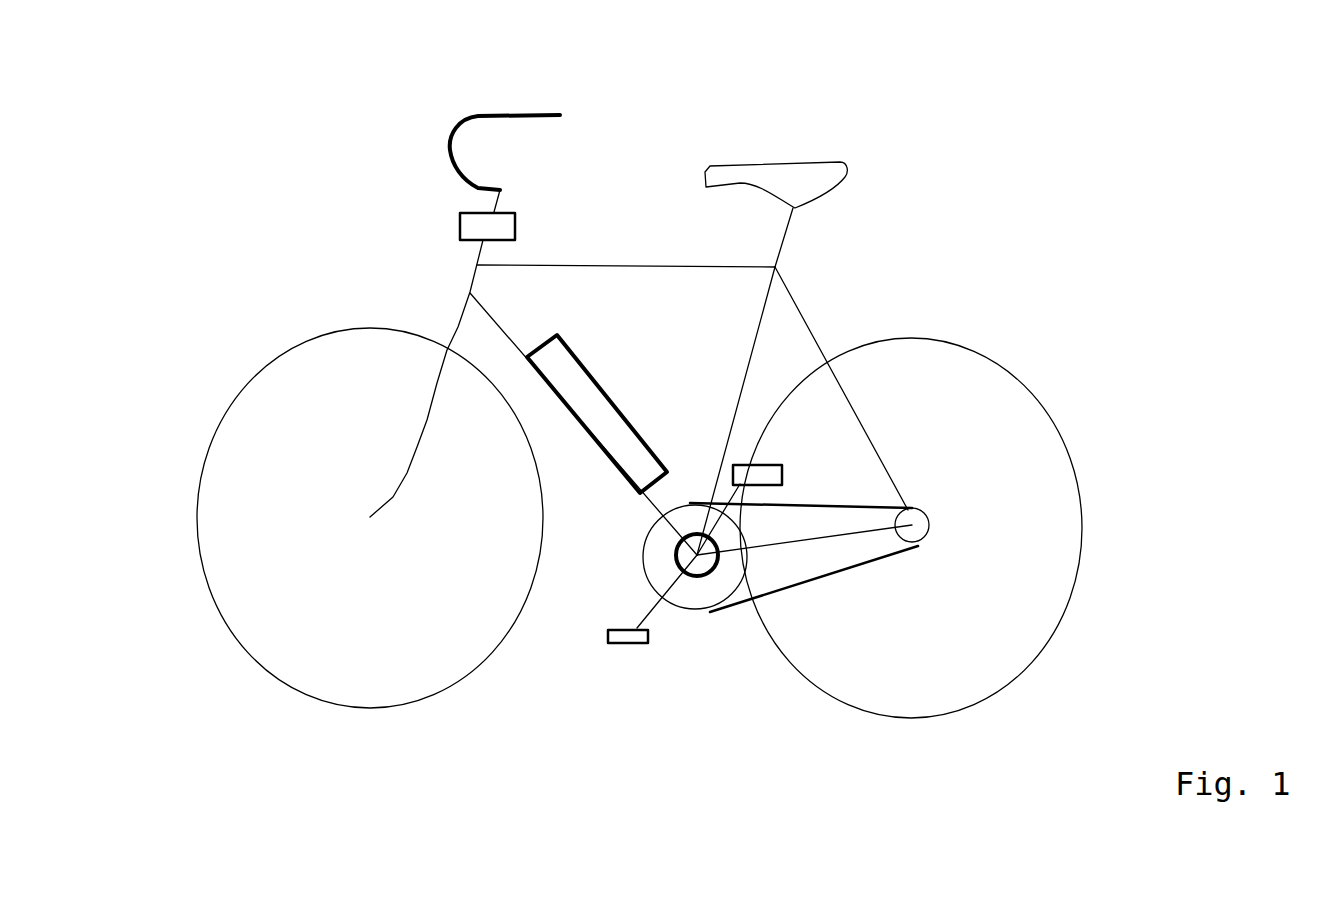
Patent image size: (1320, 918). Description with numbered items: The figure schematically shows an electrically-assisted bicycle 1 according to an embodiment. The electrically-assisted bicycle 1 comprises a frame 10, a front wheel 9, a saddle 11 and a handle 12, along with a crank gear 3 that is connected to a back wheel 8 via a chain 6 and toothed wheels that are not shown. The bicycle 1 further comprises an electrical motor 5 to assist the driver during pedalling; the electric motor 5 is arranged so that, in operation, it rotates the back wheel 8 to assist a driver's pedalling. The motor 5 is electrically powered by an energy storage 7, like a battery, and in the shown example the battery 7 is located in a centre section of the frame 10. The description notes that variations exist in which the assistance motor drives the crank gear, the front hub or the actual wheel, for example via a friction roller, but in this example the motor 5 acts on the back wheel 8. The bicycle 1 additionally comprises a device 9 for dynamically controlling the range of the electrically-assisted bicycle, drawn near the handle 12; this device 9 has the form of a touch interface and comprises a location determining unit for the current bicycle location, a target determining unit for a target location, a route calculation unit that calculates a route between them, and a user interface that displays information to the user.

The electrically-assisted bicycle 1 is at (226, 241).
The crank gear 3 is at (688, 617).
The electrical motor 5 is at (675, 567).
The chain 6 is at (832, 582).
The energy storage 7 is at (590, 400).
The back wheel 8 is at (1070, 593).
The front wheel 9 is at (360, 710).
The frame 10 is at (652, 262).
The saddle 11 is at (797, 180).
The handle 12 is at (507, 115).